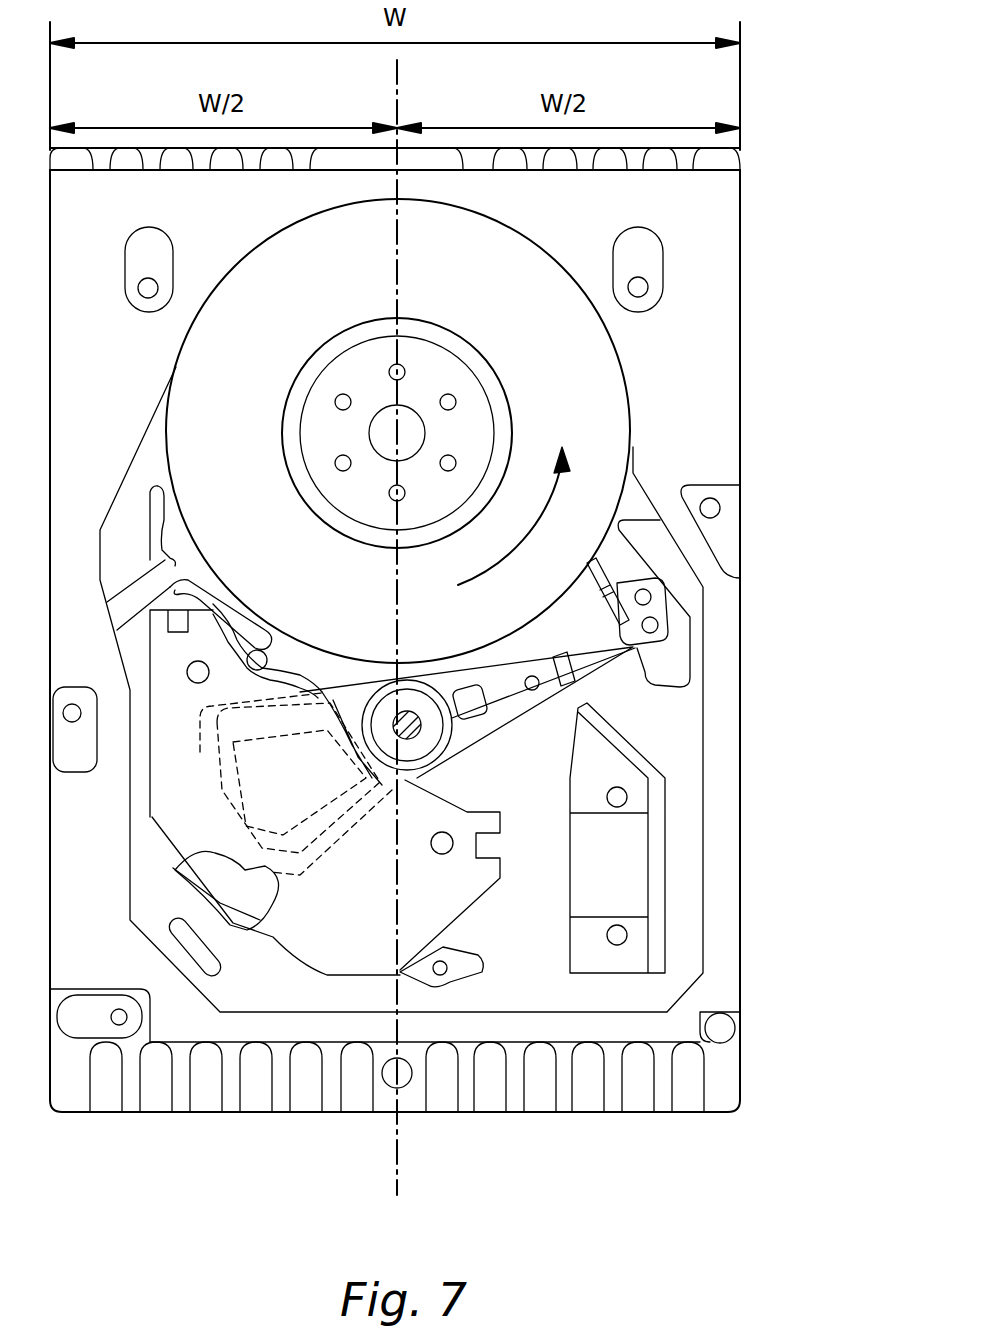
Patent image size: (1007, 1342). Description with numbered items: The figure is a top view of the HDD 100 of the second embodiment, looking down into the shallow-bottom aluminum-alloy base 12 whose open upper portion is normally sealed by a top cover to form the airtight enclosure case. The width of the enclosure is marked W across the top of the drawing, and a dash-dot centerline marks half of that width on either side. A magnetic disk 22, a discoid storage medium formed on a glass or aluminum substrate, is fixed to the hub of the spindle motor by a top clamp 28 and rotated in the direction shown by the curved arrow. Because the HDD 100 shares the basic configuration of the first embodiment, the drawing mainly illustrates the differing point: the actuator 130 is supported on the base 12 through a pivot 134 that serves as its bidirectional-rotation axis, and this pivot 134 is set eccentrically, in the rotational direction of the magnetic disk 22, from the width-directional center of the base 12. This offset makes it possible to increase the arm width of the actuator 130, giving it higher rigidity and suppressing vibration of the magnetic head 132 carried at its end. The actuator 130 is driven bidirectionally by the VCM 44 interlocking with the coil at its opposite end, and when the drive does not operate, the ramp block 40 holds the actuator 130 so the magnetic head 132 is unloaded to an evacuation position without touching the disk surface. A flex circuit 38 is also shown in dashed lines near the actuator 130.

The HDD 100 is at (812, 185).
The base 12 is at (742, 612).
The magnetic disk 22 is at (197, 375).
The top clamp 28 is at (480, 416).
The flex circuit 38 is at (240, 793).
The ramp block 40 is at (680, 628).
The actuator 130 is at (473, 744).
The magnetic head 132 is at (635, 650).
The pivot 134 is at (418, 737).
The VCM 44 is at (175, 870).